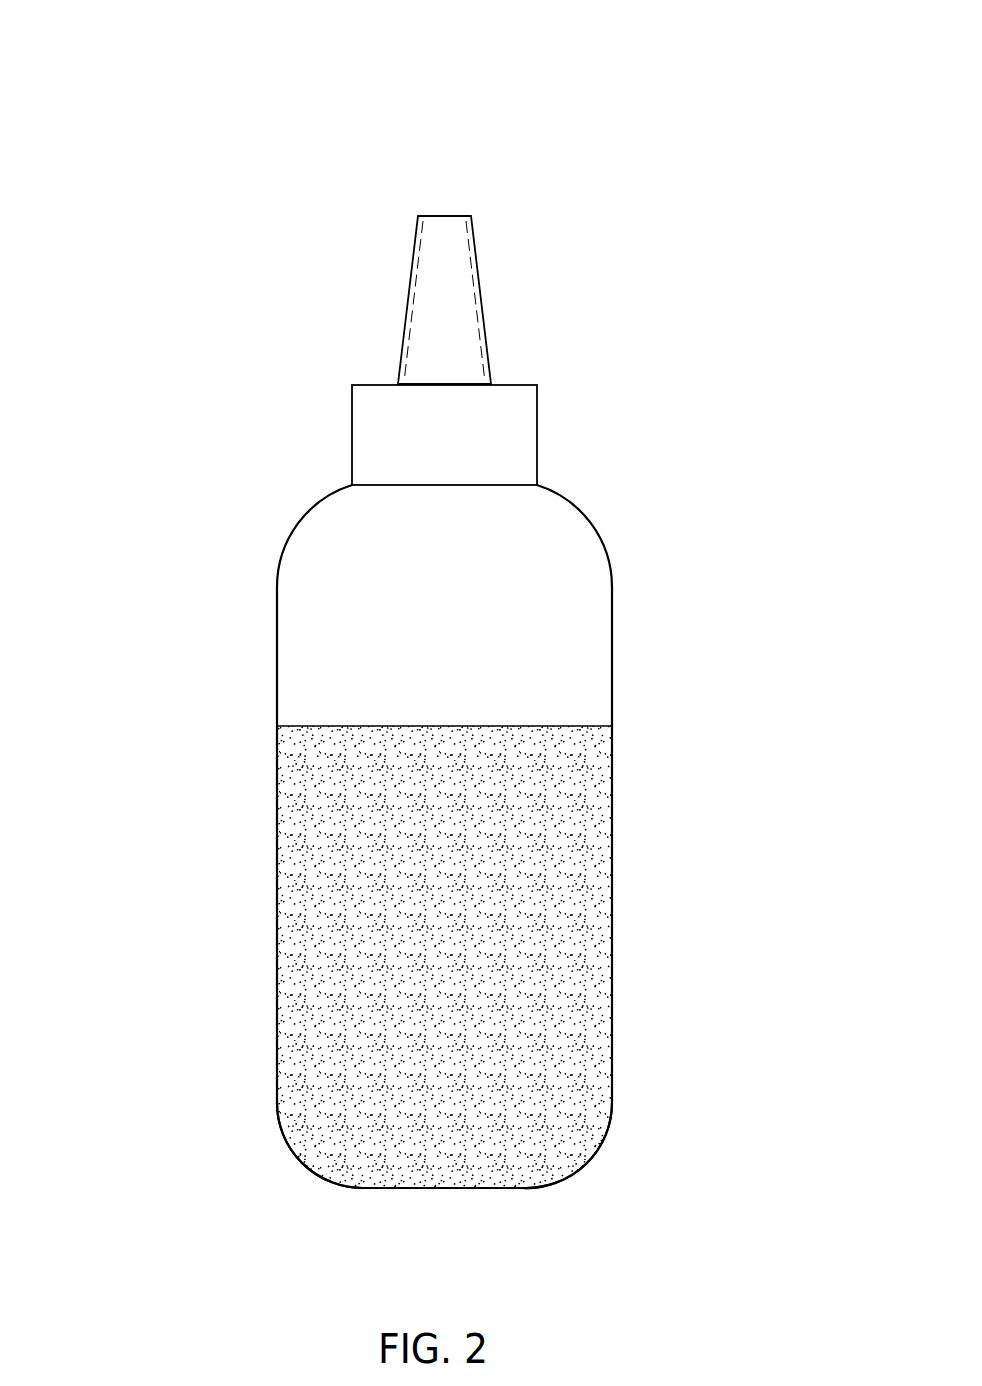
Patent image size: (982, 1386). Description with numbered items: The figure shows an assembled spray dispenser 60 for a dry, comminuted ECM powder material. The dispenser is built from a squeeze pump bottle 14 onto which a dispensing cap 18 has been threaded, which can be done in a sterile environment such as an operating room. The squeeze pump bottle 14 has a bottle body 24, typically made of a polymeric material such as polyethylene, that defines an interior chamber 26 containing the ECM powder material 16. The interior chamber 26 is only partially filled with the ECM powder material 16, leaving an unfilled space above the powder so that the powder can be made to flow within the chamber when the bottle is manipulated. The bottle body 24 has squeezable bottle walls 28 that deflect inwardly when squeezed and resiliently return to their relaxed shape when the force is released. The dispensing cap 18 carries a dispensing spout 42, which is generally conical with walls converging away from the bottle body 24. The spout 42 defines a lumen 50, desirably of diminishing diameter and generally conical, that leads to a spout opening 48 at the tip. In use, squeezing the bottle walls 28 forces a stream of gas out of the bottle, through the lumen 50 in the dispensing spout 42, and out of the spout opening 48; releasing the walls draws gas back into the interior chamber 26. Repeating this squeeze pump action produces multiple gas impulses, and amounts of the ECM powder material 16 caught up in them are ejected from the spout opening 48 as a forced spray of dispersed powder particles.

The spray dispenser 60 is at (466, 78).
The spout opening 48 is at (456, 195).
The dispensing spout 42 is at (407, 308).
The lumen 50 is at (463, 257).
The dispensing cap 18 is at (582, 432).
The squeeze pump bottle 14 is at (638, 647).
The ECM powder material 16 is at (575, 867).
The bottle walls 28 is at (277, 697).
The interior chamber 26 is at (358, 622).
The bottle body 24 is at (283, 1091).